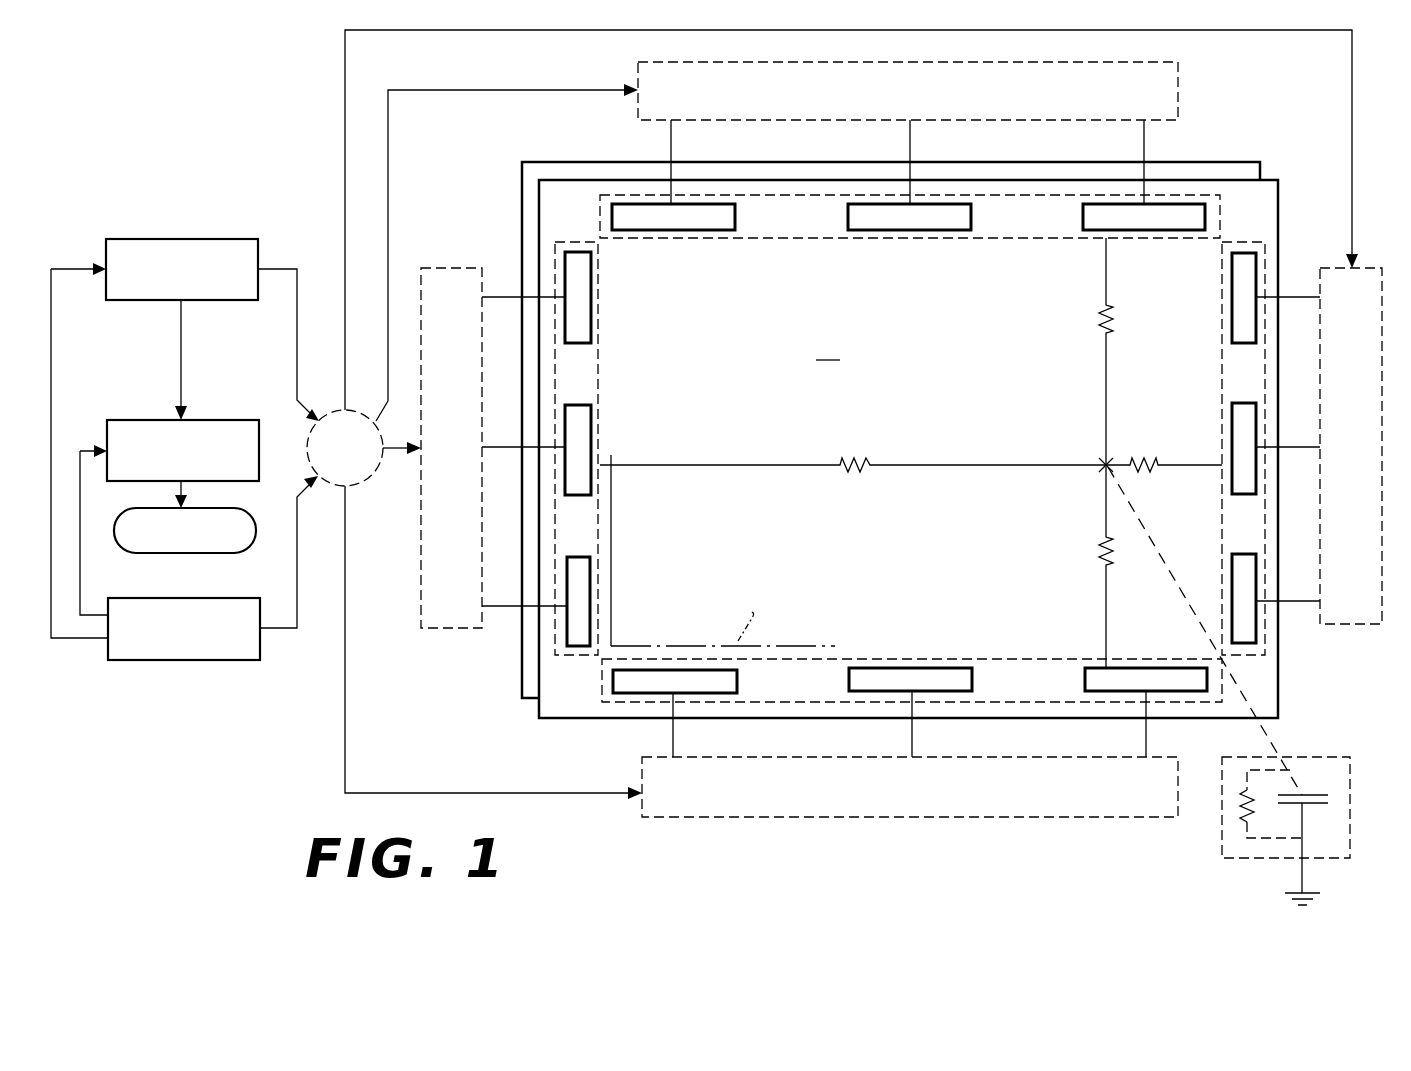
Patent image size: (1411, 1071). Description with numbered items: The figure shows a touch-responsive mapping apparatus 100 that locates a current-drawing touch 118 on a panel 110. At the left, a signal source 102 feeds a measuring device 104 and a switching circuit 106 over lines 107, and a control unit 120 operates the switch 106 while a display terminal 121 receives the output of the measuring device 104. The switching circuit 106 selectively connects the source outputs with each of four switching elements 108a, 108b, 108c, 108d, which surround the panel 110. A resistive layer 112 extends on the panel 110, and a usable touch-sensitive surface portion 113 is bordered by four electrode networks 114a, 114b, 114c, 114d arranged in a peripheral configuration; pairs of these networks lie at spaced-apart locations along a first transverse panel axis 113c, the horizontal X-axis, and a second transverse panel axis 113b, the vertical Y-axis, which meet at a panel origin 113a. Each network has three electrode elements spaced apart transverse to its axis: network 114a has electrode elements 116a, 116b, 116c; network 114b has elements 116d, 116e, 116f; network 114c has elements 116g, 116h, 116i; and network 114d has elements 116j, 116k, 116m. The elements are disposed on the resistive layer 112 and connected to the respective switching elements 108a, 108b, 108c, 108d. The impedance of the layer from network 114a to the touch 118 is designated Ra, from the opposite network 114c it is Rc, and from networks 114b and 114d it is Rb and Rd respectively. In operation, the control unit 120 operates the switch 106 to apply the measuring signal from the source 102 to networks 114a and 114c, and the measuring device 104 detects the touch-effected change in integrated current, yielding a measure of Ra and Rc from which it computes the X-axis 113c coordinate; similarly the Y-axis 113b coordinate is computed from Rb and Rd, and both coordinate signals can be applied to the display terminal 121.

The touch-responsive mapping apparatus 100 is at (278, 124).
The signal source 102 is at (199, 240).
The measuring device 104 is at (209, 421).
The switching circuit 106 is at (356, 487).
The lines 107 is at (297, 344).
The switching element 108a is at (428, 628).
The switching element 108b is at (770, 65).
The switching element 108c is at (1352, 624).
The switching element 108d is at (1036, 817).
The panel 110 is at (548, 170).
The resistive layer 112 is at (605, 184).
The touch-sensitive surface portion 113 is at (832, 348).
The panel origin 113a is at (612, 645).
The second transverse panel axis 113b is at (616, 545).
The first transverse panel axis 113c is at (771, 621).
The electrode network 114a is at (580, 368).
The electrode network 114b is at (784, 238).
The electrode network 114c is at (1243, 511).
The electrode network 114d is at (1026, 673).
The electrode element 116a is at (580, 312).
The electrode element 116b is at (583, 437).
The electrode element 116c is at (580, 581).
The electrode element 116d is at (667, 222).
The electrode element 116e is at (905, 222).
The electrode element 116f is at (1145, 222).
The electrode element 116g is at (1240, 295).
The electrode element 116h is at (1240, 471).
The electrode element 116i is at (1243, 573).
The electrode element 116j is at (1183, 676).
The electrode element 116k is at (917, 676).
The electrode element 116m is at (653, 677).
The current-drawing touch 118 is at (1100, 457).
The control unit 120 is at (226, 660).
The display terminal 121 is at (223, 553).
The impedance Ra is at (849, 460).
The impedance Rb is at (1090, 321).
The impedance Rc is at (1139, 460).
The impedance Rd is at (1095, 561).